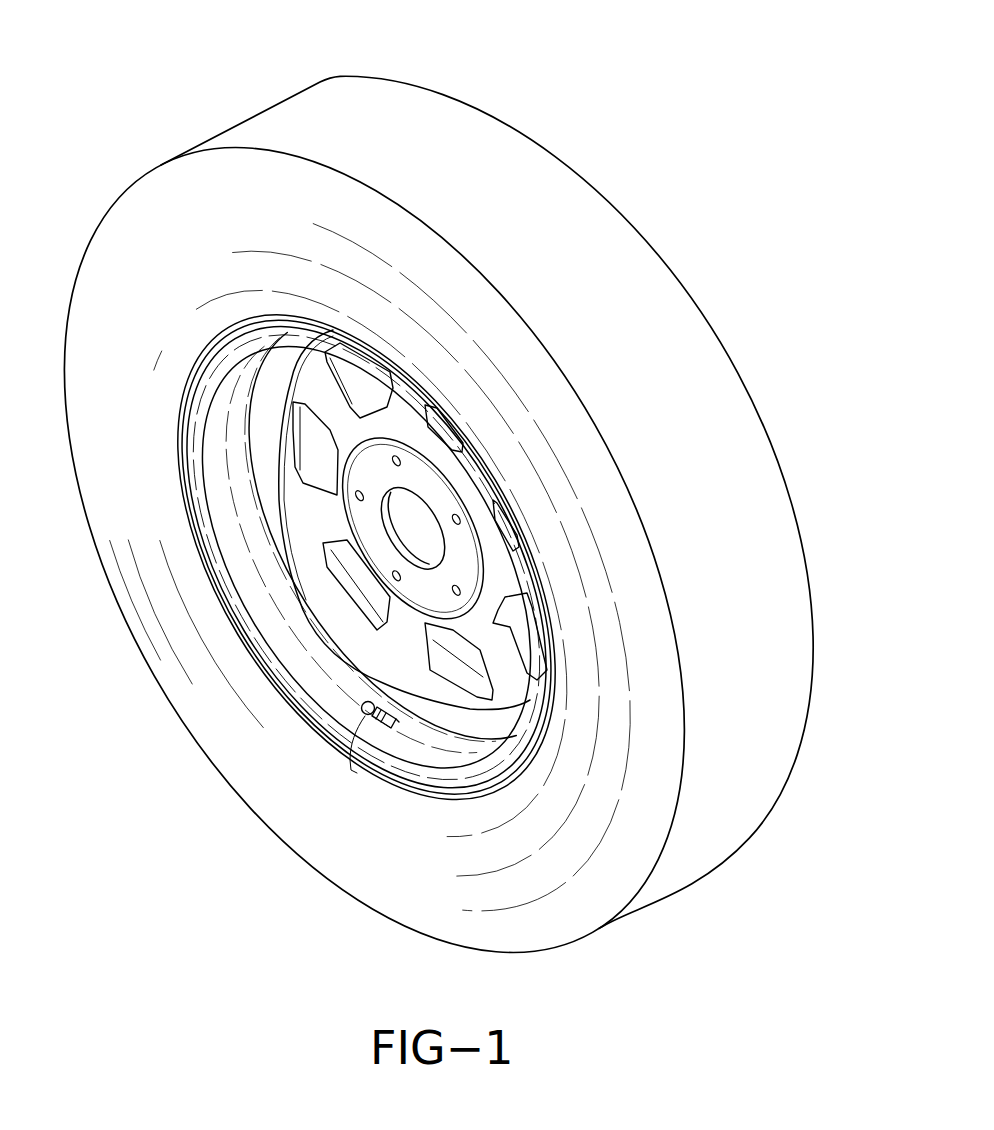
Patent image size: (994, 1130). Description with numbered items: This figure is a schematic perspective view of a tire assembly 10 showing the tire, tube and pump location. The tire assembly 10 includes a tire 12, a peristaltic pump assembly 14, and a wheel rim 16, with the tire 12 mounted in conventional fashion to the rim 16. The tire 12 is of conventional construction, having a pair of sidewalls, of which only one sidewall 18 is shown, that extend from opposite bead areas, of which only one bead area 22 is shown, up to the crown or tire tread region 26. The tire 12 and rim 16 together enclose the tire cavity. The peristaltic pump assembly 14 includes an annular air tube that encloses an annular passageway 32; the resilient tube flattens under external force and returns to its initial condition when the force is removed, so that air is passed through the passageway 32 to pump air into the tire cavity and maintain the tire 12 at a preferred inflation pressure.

The tire assembly 10 is at (692, 107).
The tire 12 is at (487, 157).
The peristaltic pump assembly 14 is at (353, 780).
The wheel rim 16 is at (317, 687).
The sidewall 18 is at (337, 838).
The bead area 22 is at (413, 793).
The tire tread region 26 is at (697, 358).
The annular passageway 32 is at (310, 737).